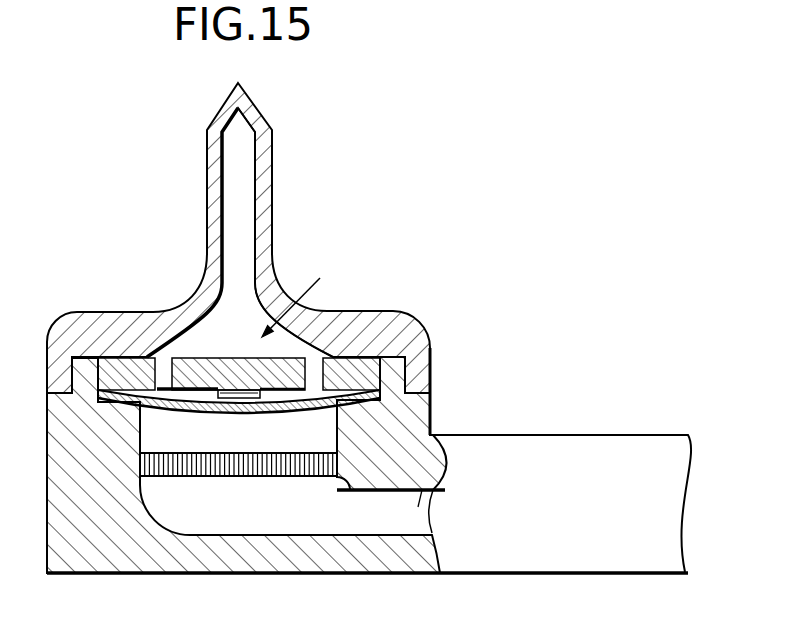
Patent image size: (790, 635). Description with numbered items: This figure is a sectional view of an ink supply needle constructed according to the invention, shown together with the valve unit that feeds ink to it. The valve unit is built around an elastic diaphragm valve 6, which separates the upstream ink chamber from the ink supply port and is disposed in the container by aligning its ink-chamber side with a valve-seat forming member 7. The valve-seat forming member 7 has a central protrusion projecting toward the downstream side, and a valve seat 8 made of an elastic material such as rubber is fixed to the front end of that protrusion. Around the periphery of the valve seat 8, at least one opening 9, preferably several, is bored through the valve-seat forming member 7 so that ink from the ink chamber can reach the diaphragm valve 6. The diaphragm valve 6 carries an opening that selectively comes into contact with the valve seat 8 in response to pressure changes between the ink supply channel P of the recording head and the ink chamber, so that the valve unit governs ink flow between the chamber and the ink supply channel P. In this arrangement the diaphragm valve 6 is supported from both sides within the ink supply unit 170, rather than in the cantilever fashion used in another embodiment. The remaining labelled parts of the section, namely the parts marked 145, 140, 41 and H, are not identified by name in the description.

The nozzle passage 145 is at (243, 167).
The ink supply unit 170 is at (270, 203).
The ink flow direction 140 is at (308, 295).
The valve seat 8 is at (240, 390).
The valve-seat forming member 7 is at (218, 388).
The opening 9 is at (164, 360).
The diaphragm valve 6 is at (282, 412).
The filter 41 is at (247, 477).
The ink supply channel P is at (442, 435).
The head substrate H is at (625, 440).